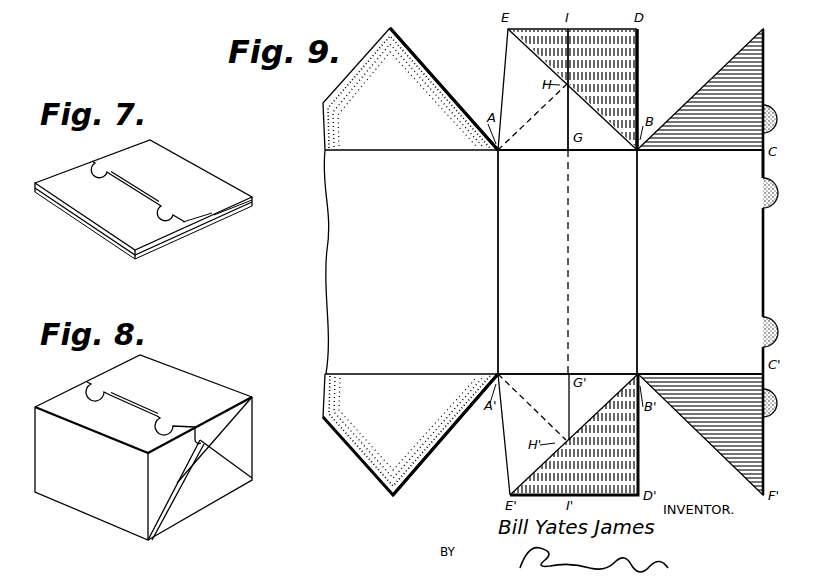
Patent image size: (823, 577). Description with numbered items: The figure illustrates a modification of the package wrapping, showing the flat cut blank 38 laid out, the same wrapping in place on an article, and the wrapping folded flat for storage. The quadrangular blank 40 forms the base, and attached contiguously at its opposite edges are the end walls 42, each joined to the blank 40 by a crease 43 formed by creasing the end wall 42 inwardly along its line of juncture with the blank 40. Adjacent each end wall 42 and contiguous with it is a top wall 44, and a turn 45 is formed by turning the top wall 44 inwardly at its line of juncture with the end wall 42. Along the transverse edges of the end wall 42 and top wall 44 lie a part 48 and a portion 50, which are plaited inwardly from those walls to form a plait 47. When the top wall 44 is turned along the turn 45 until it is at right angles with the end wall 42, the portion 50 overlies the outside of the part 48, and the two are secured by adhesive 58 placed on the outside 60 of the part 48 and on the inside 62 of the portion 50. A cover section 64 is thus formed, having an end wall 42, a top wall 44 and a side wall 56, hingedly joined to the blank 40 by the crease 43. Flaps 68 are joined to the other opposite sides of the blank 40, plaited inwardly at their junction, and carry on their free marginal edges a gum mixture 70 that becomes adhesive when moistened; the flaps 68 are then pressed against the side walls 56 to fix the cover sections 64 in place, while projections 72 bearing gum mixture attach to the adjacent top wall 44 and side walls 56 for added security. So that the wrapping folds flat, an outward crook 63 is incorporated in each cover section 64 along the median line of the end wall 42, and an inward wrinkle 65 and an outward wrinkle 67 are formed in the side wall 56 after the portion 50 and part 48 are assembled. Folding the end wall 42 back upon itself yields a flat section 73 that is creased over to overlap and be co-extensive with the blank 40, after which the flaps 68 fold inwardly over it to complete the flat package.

In FIG. 9, the blank 38 is at (544, 324).
In FIG. 9, the quadrangular blank 40 is at (411, 262).
In FIG. 9, the end wall 42 is at (567, 262).
In FIG. 9, the crease 43 is at (498, 322).
In FIG. 9, the top wall 44 is at (700, 262).
In FIG. 9, the turn 45 is at (637, 318).
In FIG. 9, the plait 47 is at (595, 152).
In FIG. 9, the part 48 is at (567, 89).
In FIG. 9, the portion 50 is at (752, 98).
In FIG. 8, the side wall 56 is at (160, 493).
In FIG. 9, the adhesive 58 is at (607, 33).
In FIG. 9, the outside of part 60 is at (637, 68).
In FIG. 9, the inside of portion 62 is at (735, 138).
In FIG. 9, the outward crook 63 is at (568, 258).
In FIG. 8, the cover section 64 is at (45, 420).
In FIG. 9, the cover section 64 is at (777, 262).
In FIG. 9, the inward wrinkle 65 is at (568, 110).
In FIG. 9, the outward wrinkle 67 is at (570, 50).
In FIG. 8, the flap 68 is at (212, 475).
In FIG. 9, the flap 68 is at (410, 261).
In FIG. 9, the gum mixture 70 is at (440, 84).
In FIG. 7, the projection 72 is at (106, 160).
In FIG. 8, the projection 72 is at (108, 388).
In FIG. 9, the projection 72 is at (778, 206).
In FIG. 7, the flat section 73 is at (225, 176).